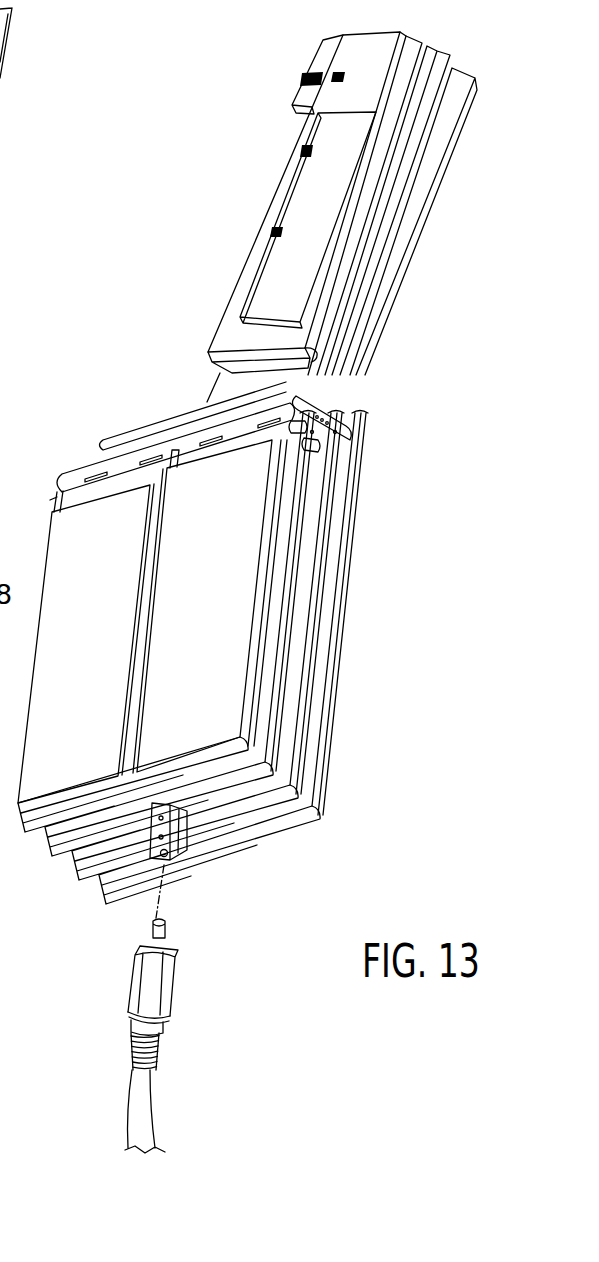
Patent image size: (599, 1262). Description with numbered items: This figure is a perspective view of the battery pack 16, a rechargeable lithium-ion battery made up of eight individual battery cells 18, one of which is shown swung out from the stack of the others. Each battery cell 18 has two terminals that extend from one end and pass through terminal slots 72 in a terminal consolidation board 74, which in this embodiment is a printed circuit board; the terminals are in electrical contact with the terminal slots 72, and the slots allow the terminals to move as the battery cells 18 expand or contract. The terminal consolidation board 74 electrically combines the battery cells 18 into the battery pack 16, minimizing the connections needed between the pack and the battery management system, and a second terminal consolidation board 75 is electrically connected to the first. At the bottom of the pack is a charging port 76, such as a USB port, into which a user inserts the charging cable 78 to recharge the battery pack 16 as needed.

The battery pack 16 is at (278, 1107).
The battery cell 18 is at (296, 150).
The terminal slot 72 is at (147, 458).
The terminal consolidation board 74 is at (73, 480).
The terminal consolidation board 75 is at (343, 442).
The charging port 76 is at (176, 857).
The charging cable 78 is at (140, 1105).